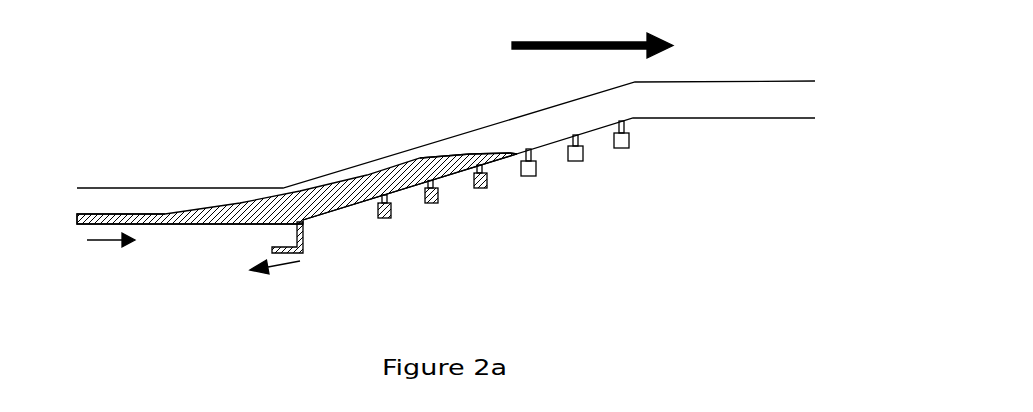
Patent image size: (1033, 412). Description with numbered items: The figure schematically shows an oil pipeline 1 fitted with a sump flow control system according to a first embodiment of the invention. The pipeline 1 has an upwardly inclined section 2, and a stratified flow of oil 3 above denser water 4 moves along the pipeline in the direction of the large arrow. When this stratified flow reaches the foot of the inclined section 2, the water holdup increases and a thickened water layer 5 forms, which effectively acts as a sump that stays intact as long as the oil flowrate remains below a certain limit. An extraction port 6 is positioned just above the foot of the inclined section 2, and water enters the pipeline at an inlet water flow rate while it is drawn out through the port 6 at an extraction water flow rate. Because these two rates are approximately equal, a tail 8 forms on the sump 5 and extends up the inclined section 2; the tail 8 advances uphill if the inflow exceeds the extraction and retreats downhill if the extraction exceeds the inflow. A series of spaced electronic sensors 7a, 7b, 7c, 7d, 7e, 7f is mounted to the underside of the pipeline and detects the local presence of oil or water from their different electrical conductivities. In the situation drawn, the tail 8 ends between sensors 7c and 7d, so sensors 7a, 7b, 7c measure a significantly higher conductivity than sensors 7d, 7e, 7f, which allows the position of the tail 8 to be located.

The oil pipeline 1 is at (335, 90).
The upwardly inclined section 2 is at (457, 135).
The oil 3 is at (108, 200).
The water 4 is at (138, 215).
The thickened water layer 5 is at (338, 192).
The extraction port 6 is at (303, 243).
The electronic sensor 7a is at (390, 218).
The electronic sensor 7b is at (438, 203).
The electronic sensor 7c is at (487, 188).
The electronic sensor 7d is at (536, 176).
The electronic sensor 7e is at (583, 161).
The electronic sensor 7f is at (629, 148).
The tail 8 is at (447, 158).